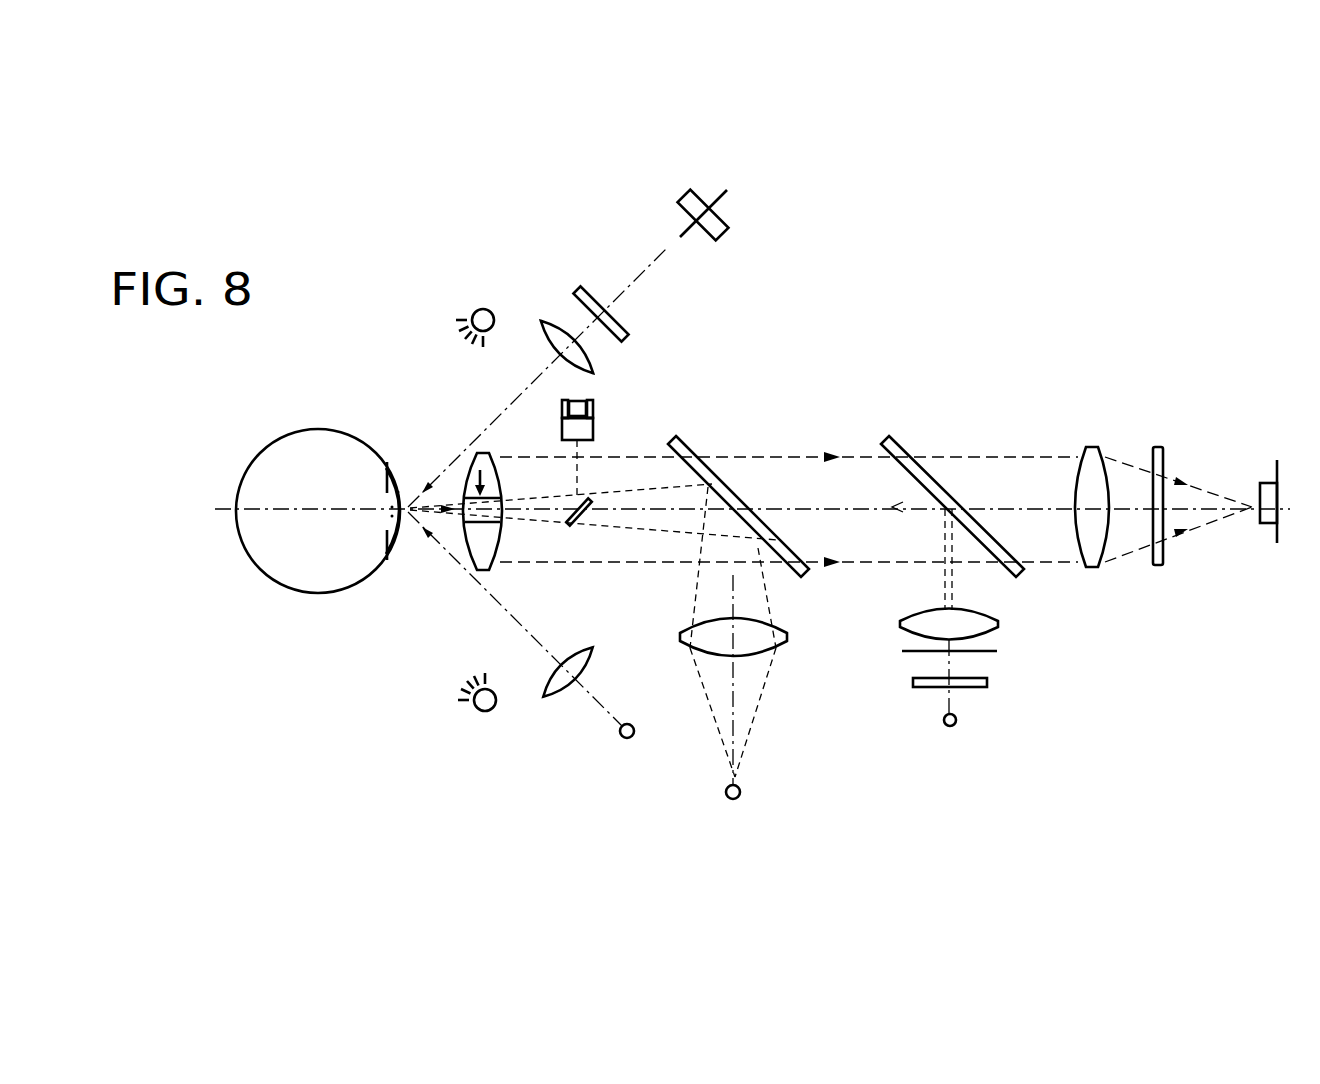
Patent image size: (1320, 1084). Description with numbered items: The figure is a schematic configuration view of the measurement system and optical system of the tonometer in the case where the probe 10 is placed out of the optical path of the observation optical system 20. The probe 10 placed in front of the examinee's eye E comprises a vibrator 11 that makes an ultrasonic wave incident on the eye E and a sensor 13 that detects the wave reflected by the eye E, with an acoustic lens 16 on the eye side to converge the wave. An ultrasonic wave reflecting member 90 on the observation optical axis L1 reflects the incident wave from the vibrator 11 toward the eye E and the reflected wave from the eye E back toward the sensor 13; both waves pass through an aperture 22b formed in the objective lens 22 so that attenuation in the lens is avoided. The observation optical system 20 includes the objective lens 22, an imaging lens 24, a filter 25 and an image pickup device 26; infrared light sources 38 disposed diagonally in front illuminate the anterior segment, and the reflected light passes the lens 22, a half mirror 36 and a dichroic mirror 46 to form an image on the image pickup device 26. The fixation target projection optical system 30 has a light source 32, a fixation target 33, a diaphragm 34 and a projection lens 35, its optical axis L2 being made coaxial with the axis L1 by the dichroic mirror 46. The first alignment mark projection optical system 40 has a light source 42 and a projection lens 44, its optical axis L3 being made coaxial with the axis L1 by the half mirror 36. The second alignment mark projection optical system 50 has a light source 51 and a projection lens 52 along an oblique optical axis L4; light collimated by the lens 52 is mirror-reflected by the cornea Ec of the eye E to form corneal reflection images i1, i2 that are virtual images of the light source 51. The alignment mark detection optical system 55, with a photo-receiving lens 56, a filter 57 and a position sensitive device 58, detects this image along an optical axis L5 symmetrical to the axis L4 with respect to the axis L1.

The examinee's eye E is at (256, 566).
The cornea Ec is at (398, 490).
The alignment mark image i1 is at (392, 507).
The alignment mark image i2 is at (392, 516).
The probe 10 is at (668, 411).
The vibrator 11 is at (594, 408).
The sensor 13 is at (582, 399).
The acoustic lens 16 is at (583, 425).
The observation optical system 20 is at (1079, 459).
The objective lens 22 is at (472, 543).
The aperture 22b is at (481, 452).
The imaging lens 24 is at (1097, 446).
The filter 25 is at (1156, 446).
The image pickup device 26 is at (1270, 497).
The fixation target projection optical system 30 is at (955, 738).
The light source 32 is at (952, 727).
The fixation target 33 is at (966, 688).
The diaphragm 34 is at (913, 652).
The projection lens 35 is at (902, 623).
The half mirror 36 is at (688, 443).
The light sources 38 is at (483, 309).
The first alignment mark projection optical system 40 is at (756, 781).
The light source 42 is at (735, 800).
The projection lens 44 is at (683, 642).
The dichroic mirror 46 is at (886, 434).
The second alignment mark projection optical system 50 is at (558, 765).
The light source 51 is at (627, 740).
The projection lens 52 is at (587, 660).
The alignment mark detection optical system 55 is at (642, 214).
The photo-receiving lens 56 is at (548, 322).
The filter 57 is at (575, 282).
The position sensitive device 58 is at (693, 197).
The ultrasonic wave reflecting member 90 is at (580, 524).
The observation optical axis L1 is at (773, 508).
The optical axis L2 is at (952, 583).
The optical axis L3 is at (733, 593).
The optical axis L4 is at (595, 700).
The optical axis L5 is at (652, 267).